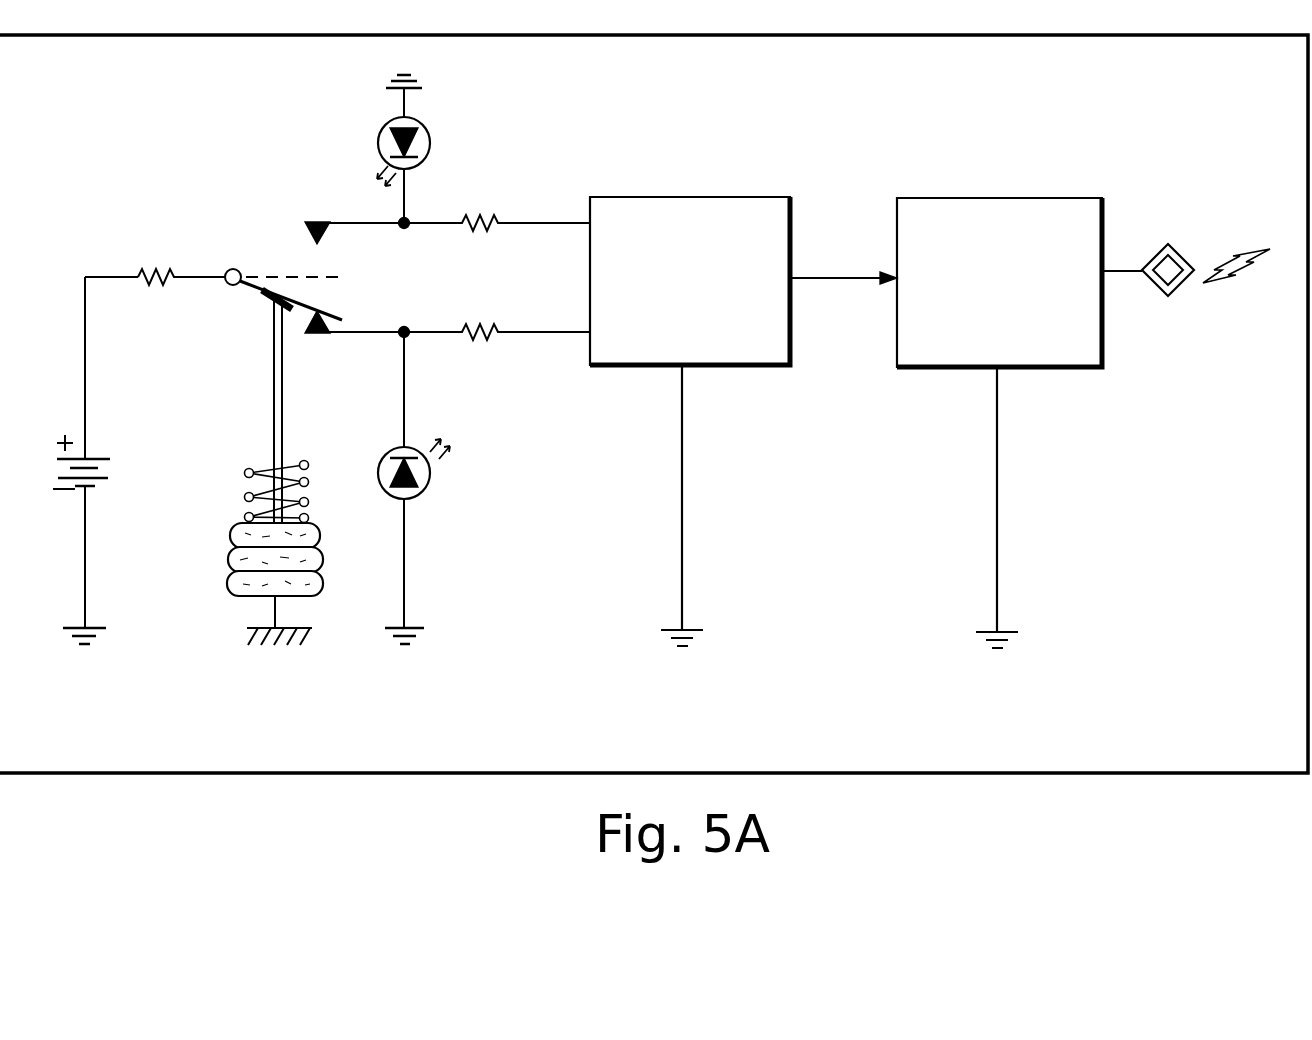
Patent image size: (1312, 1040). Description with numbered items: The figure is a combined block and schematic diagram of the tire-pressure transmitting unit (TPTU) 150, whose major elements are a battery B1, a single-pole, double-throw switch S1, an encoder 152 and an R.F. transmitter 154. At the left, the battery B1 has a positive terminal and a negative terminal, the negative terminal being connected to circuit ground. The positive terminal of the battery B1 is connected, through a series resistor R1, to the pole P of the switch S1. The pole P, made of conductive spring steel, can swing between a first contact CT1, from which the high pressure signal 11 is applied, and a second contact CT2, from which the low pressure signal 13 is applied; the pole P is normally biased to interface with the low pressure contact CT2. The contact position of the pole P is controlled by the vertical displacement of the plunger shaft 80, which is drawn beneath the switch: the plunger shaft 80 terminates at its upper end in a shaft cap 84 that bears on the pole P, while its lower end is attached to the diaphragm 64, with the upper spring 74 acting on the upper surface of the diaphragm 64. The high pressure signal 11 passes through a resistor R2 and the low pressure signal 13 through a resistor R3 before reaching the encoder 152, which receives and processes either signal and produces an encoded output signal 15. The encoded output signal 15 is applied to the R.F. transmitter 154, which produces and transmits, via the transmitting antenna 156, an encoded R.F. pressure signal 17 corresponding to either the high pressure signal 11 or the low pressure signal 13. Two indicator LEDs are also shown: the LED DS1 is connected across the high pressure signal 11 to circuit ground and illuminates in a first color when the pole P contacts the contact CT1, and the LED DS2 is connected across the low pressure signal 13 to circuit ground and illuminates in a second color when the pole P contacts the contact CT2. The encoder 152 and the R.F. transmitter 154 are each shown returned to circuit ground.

The tire-pressure transmitting unit (TPTU) 150 is at (654, 404).
The encoder 152 is at (690, 421).
The R.F. transmitter 154 is at (999, 423).
The transmitting antenna 156 is at (1183, 294).
The high pressure signal 11 is at (557, 222).
The low pressure signal 13 is at (542, 333).
The encoded output signal 15 is at (843, 278).
The encoded R.F. pressure signal 17 is at (1120, 270).
The resistor R1 is at (140, 268).
The resistor R2 is at (462, 216).
The resistor R3 is at (500, 338).
The battery B1 is at (88, 458).
The single-pole, double-throw switch S1 is at (229, 285).
The pole P is at (340, 310).
The first contact CT1 is at (302, 231).
The second contact CT2 is at (312, 325).
The LED DS1 is at (422, 115).
The LED DS2 is at (430, 490).
The shaft cap 84 is at (273, 297).
The plunger shaft 80 is at (275, 395).
The upper spring 74 is at (246, 497).
The diaphragm 64 is at (230, 555).